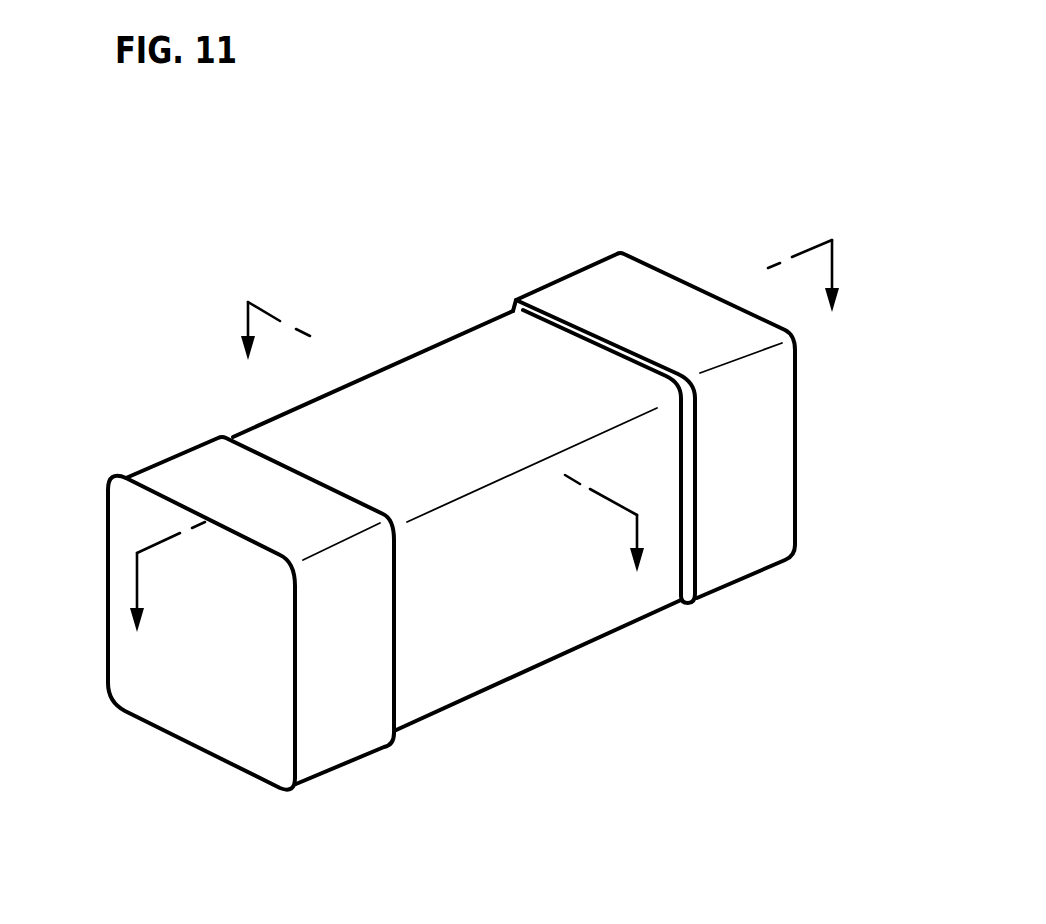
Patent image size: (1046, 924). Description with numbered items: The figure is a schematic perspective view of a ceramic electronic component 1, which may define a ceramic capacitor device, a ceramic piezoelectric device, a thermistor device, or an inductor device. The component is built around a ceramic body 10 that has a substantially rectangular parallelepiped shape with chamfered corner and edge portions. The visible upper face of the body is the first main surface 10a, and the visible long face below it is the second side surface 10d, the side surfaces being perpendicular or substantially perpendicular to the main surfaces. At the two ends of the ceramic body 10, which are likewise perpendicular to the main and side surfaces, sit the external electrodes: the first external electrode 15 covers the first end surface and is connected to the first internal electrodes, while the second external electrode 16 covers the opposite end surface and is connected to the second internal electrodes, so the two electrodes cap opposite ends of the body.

The ceramic electronic component 1 is at (523, 228).
The ceramic body 10 is at (450, 335).
The first main surface 10a is at (570, 396).
The second side surface 10d is at (448, 652).
The first external electrode 15 is at (167, 457).
The second external electrode 16 is at (648, 264).